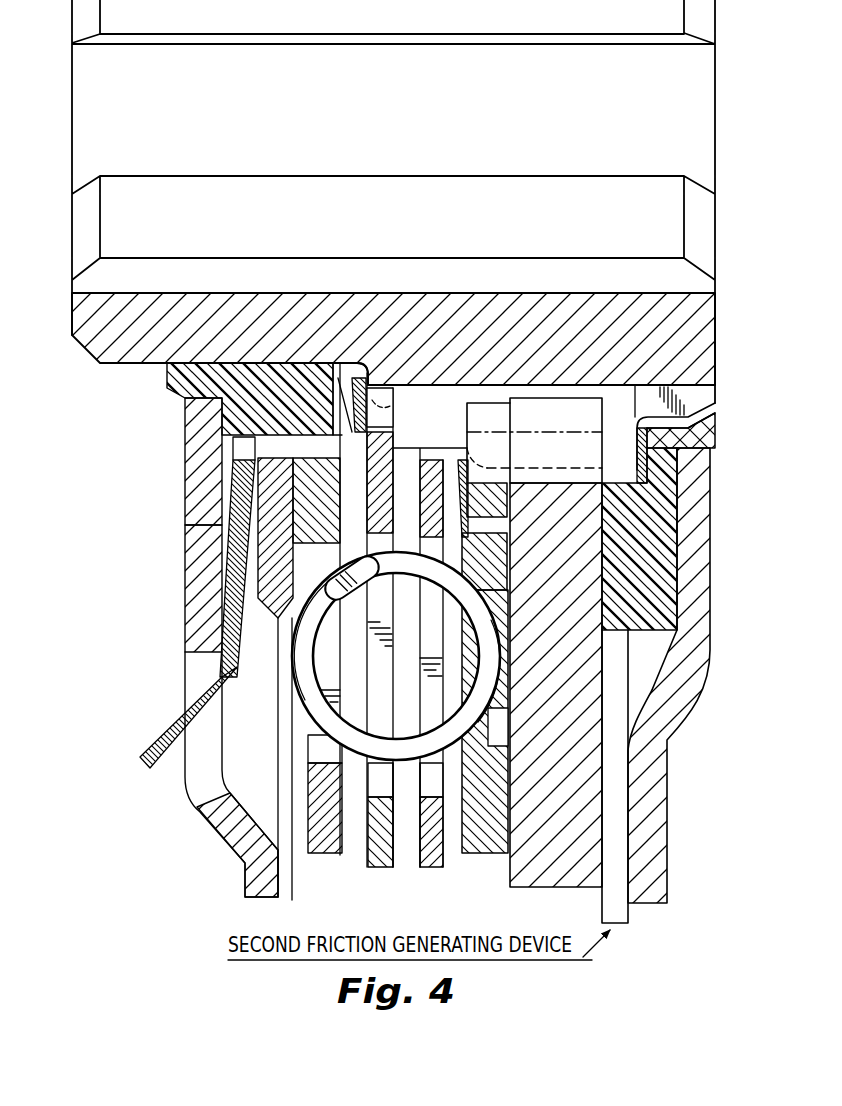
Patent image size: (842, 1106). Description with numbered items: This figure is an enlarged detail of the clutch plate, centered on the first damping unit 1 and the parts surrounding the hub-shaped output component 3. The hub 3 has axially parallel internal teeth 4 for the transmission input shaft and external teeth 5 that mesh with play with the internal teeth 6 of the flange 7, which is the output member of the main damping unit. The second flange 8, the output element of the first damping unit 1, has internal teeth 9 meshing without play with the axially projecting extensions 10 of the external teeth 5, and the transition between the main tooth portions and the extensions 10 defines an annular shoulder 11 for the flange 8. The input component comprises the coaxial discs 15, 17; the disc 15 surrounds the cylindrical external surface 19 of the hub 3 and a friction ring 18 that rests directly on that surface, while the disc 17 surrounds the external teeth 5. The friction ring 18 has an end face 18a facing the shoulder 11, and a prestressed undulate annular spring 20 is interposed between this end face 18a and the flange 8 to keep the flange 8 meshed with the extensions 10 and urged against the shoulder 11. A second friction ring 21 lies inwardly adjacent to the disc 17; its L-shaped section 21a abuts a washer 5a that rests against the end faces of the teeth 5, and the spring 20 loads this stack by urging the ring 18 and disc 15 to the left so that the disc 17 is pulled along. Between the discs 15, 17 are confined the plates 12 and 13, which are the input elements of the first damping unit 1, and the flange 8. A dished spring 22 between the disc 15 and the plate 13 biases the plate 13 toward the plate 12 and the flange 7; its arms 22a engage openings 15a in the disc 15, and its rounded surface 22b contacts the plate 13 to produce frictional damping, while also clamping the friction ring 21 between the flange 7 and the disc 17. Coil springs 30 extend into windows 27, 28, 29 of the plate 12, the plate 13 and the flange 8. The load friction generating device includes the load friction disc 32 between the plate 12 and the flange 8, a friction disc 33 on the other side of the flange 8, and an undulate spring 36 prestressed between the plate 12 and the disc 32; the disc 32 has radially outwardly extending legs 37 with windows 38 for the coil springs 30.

The first damping unit 1 is at (183, 777).
The hub-shaped output component 3 is at (95, 326).
The internal teeth 4 is at (160, 272).
The external teeth 5 is at (662, 377).
The washer 5a is at (716, 413).
The internal teeth 6 is at (650, 387).
The flange 7 is at (540, 880).
The second flange 8 is at (380, 860).
The internal teeth 9 is at (395, 385).
The extensions 10 is at (380, 392).
The annular shoulder 11 is at (430, 440).
The plate 12 is at (487, 853).
The plate 13 is at (312, 788).
The disc 15 is at (195, 560).
The openings 15a is at (203, 802).
The disc 17 is at (693, 566).
The friction ring 18 is at (185, 434).
The end face 18a is at (330, 422).
The cylindrical external surface 19 is at (228, 362).
The undulate annular spring 20 is at (356, 378).
The second friction ring 21 is at (658, 516).
The L-shaped section 21a is at (655, 476).
The dished spring 22 is at (230, 605).
The arms 22a is at (175, 735).
The rounded surface 22b is at (250, 473).
The window 27 is at (505, 706).
The window 28 is at (283, 610).
The window 29 is at (335, 855).
The coil springs 30 is at (485, 657).
The load friction disc 32 is at (480, 495).
The friction disc 33 is at (333, 535).
The undulate spring 36 is at (470, 470).
The legs 37 is at (433, 868).
The windows 38 is at (425, 865).